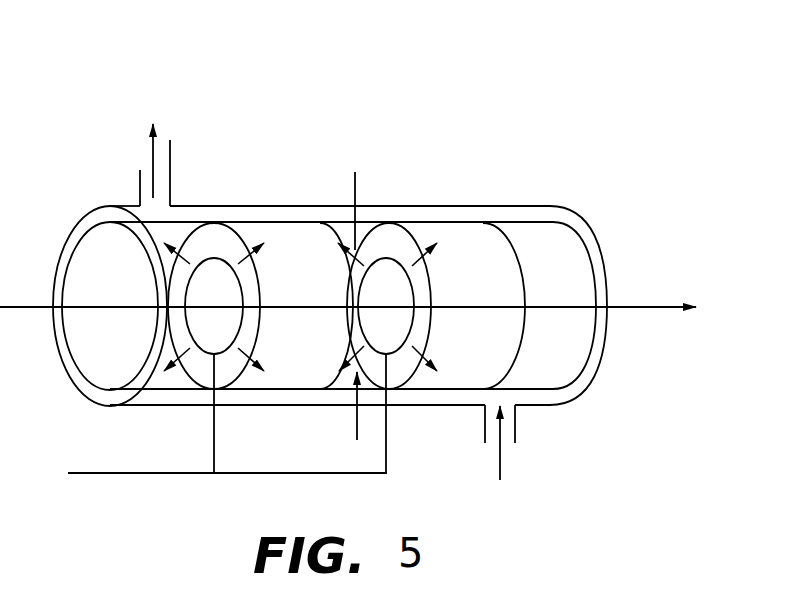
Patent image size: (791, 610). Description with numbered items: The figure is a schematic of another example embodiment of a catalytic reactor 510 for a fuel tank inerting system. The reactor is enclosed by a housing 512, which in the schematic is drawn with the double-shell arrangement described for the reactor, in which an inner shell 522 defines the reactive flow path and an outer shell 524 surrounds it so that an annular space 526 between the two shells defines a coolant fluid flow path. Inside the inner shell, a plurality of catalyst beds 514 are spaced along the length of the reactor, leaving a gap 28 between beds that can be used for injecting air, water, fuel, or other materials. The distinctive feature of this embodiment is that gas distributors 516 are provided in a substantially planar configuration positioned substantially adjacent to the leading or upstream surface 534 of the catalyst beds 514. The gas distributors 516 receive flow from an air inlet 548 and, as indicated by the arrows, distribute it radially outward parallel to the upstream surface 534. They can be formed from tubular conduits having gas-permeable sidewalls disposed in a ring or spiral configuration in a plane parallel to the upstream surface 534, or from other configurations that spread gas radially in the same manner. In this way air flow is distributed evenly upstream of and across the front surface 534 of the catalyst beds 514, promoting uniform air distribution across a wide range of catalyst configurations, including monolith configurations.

The treatment device 510 is at (330, 225).
The housing 512 is at (522, 150).
The catalyst beds 514 is at (304, 377).
The gas distributors 516 is at (231, 254).
The first electrode assembly 522 is at (183, 222).
The inlet 524 is at (233, 222).
The inner wall 526 is at (302, 217).
The fluid passage 28 is at (352, 235).
The upstream surface 534 is at (385, 240).
The air inlet 548 is at (118, 474).